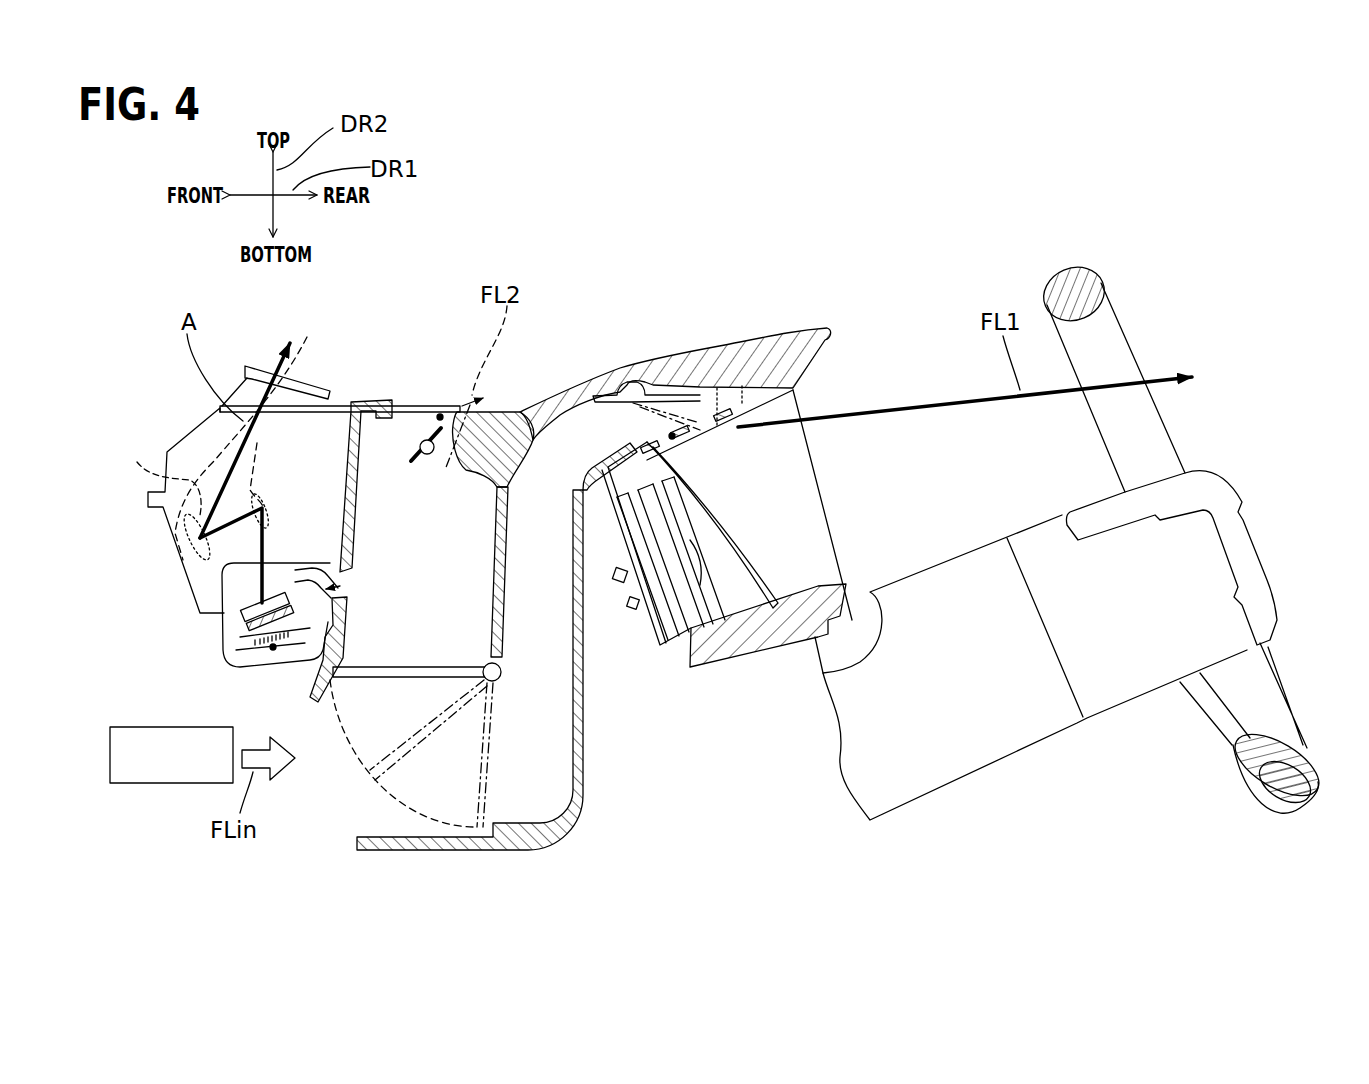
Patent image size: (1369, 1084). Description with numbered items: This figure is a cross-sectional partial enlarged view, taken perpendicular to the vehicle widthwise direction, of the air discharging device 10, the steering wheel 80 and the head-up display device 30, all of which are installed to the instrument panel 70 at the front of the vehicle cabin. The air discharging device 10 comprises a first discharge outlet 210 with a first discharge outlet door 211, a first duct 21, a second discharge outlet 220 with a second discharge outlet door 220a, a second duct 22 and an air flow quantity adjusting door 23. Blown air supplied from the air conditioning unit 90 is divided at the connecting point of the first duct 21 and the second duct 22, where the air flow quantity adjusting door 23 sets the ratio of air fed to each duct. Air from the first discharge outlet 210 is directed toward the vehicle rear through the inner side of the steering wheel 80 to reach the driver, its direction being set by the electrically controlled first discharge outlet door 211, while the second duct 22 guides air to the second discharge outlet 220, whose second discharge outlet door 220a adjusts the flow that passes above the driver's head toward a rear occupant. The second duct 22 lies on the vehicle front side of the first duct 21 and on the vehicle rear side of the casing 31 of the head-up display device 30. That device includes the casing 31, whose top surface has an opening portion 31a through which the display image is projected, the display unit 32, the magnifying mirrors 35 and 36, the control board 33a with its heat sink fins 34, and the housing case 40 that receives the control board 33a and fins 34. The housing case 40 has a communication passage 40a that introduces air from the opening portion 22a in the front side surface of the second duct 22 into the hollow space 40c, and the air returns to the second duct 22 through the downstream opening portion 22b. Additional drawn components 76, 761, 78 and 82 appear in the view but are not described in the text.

The air discharging device 10 is at (850, 302).
The first duct 21 is at (587, 637).
The second duct 22 is at (347, 497).
The opening portion 22a is at (345, 580).
The opening portion 22b is at (357, 552).
The air flow quantity adjusting door 23 is at (432, 682).
The head-up display device 30 is at (226, 449).
The casing 31 is at (178, 443).
The opening portion 31a is at (265, 362).
The display unit 32 is at (253, 618).
The control board 33a is at (250, 645).
The heat sink fins 34 is at (250, 657).
The magnifying mirror 35 is at (314, 322).
The magnifying mirror 36 is at (137, 452).
The housing case 40 is at (300, 665).
The communication passage 40a is at (333, 600).
The hollow space 40c is at (273, 650).
The instrument panel 70 is at (362, 400).
The concave mirror / projector unit 76 is at (707, 610).
The mirror base plate 761 is at (760, 605).
The nozzle (hot air outlet) duct 78 is at (802, 322).
The steering wheel 80 is at (1107, 335).
The instrument panel body 82 is at (995, 748).
The air conditioning unit 90 is at (130, 785).
The first discharge outlet 210 is at (672, 433).
The first discharge outlet door 211 is at (710, 384).
The second discharge outlet 220 is at (440, 413).
The second discharge outlet door 220a is at (432, 432).